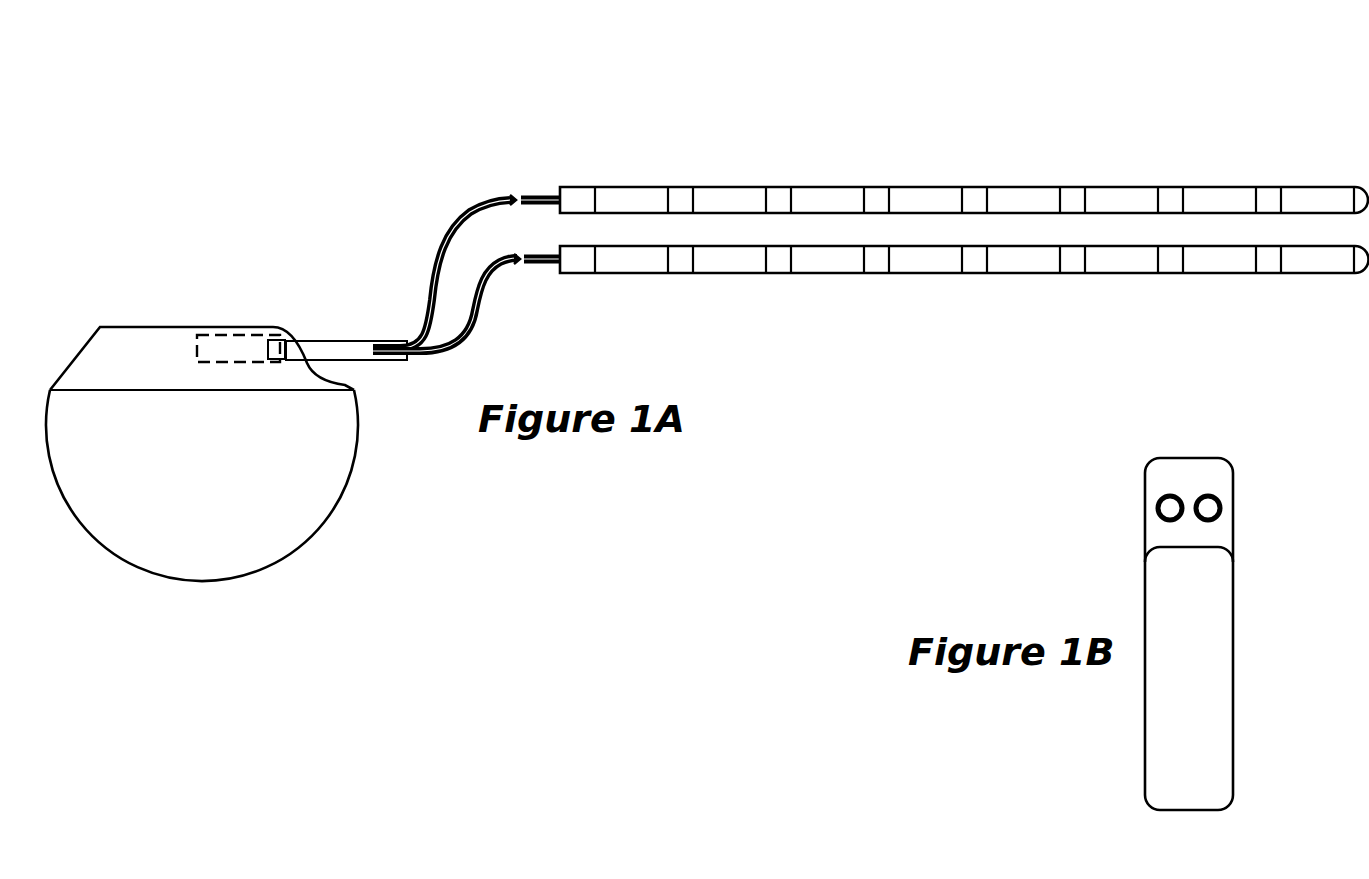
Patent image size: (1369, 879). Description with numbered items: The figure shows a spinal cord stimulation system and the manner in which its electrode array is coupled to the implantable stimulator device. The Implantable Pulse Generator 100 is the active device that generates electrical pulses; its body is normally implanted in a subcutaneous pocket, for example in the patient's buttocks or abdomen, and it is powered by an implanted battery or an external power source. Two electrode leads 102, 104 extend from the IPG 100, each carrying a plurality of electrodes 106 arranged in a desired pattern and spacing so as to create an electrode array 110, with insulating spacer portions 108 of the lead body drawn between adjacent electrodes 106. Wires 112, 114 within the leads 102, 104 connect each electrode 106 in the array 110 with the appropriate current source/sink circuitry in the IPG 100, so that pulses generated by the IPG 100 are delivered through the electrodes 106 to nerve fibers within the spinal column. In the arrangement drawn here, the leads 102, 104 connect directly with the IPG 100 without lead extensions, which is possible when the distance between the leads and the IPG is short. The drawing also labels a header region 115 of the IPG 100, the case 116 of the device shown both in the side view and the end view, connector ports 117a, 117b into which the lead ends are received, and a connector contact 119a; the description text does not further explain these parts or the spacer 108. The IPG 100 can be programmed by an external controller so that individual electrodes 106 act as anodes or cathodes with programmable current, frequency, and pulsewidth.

In FIG. 1A, the Implantable Pulse Generator 100 is at (157, 230).
In FIG. 1A, the electrode lead 102 is at (613, 165).
In FIG. 1A, the electrode lead 104 is at (657, 300).
In FIG. 1A, the electrodes 106 is at (828, 186).
In FIG. 1A, the insulating spacer of lead body 108 is at (680, 186).
In FIG. 1A, the electrode array 110 is at (1113, 148).
In FIG. 1A, the wires 112 is at (446, 200).
In FIG. 1A, the wires 114 is at (497, 287).
In FIG. 1A, the header of implantable pulse generator 115 is at (255, 302).
In FIG. 1A, the case of implantable pulse generator 116 is at (358, 450).
In FIG. 1B, the case of implantable pulse generator 116 is at (1235, 585).
In FIG. 1A, the connector port 117a is at (226, 336).
In FIG. 1B, the connector port 117a is at (1170, 500).
In FIG. 1B, the connector port 117b is at (1208, 500).
In FIG. 1A, the connector contact 119a is at (270, 339).